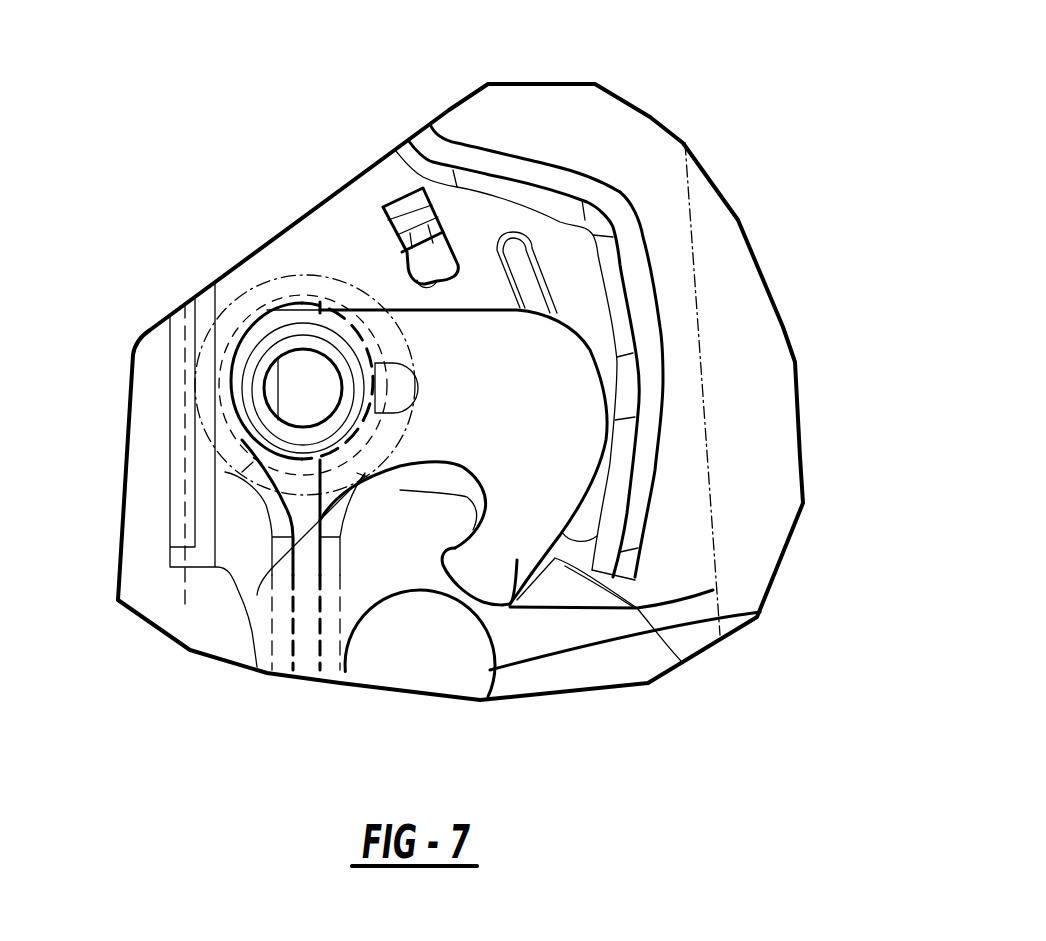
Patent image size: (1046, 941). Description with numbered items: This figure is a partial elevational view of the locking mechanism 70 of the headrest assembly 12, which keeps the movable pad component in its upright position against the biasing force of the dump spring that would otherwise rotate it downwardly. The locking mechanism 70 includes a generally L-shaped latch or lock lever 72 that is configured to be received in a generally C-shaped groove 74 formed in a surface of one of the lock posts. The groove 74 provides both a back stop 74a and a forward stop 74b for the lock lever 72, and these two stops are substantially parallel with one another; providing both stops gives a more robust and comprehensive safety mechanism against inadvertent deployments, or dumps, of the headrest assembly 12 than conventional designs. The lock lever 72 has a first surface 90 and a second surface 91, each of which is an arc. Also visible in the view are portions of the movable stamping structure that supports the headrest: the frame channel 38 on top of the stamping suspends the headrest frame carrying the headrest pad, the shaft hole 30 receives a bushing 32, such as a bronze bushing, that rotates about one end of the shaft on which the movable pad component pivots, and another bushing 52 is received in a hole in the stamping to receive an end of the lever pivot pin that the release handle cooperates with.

The headrest assembly 12 is at (797, 321).
The frame channel 38 is at (516, 112).
The locking mechanism 70 is at (642, 170).
The lock lever 72 is at (597, 472).
The bushing 52 is at (272, 391).
The groove 74 is at (452, 528).
The back stop 74a is at (515, 600).
The forward stop 74b is at (460, 550).
The second surface 91 is at (485, 492).
The first surface 90 is at (597, 536).
The bushing 32 is at (713, 590).
The shaft hole 30 is at (760, 612).